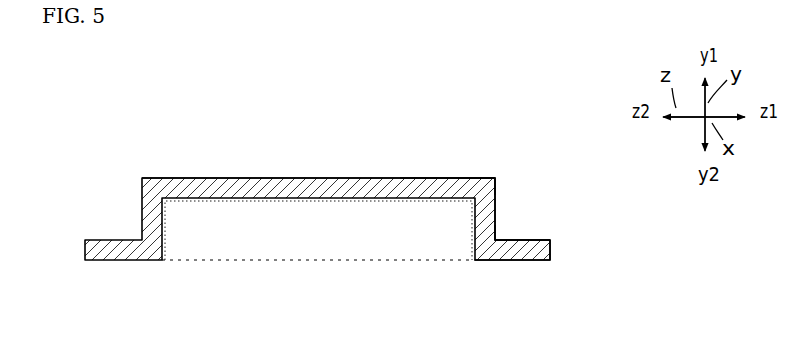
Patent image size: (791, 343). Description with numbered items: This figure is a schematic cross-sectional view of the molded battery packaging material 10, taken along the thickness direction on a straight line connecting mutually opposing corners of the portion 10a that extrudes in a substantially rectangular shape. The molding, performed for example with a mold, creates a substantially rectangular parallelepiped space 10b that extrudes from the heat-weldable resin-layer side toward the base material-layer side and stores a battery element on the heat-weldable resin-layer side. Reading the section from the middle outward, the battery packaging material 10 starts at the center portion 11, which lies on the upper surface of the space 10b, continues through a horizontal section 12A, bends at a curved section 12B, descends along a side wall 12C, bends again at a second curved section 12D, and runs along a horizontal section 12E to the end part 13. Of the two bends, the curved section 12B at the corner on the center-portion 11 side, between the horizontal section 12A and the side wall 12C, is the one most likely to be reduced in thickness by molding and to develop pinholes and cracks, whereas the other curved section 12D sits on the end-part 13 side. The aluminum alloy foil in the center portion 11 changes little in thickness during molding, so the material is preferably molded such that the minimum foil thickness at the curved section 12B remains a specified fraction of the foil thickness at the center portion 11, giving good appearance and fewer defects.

The battery packaging material 10 is at (186, 154).
The center portion 11 is at (322, 177).
The portion extruding in substantially rectangular shape 10a is at (352, 177).
The substantially rectangular parallelepiped space 10b is at (297, 227).
The horizontal section 12A is at (440, 177).
The curved section 12B is at (496, 177).
The side wall 12C is at (497, 213).
The curved section 12D is at (497, 238).
The horizontal section 12E is at (532, 237).
The end part 13 is at (553, 255).